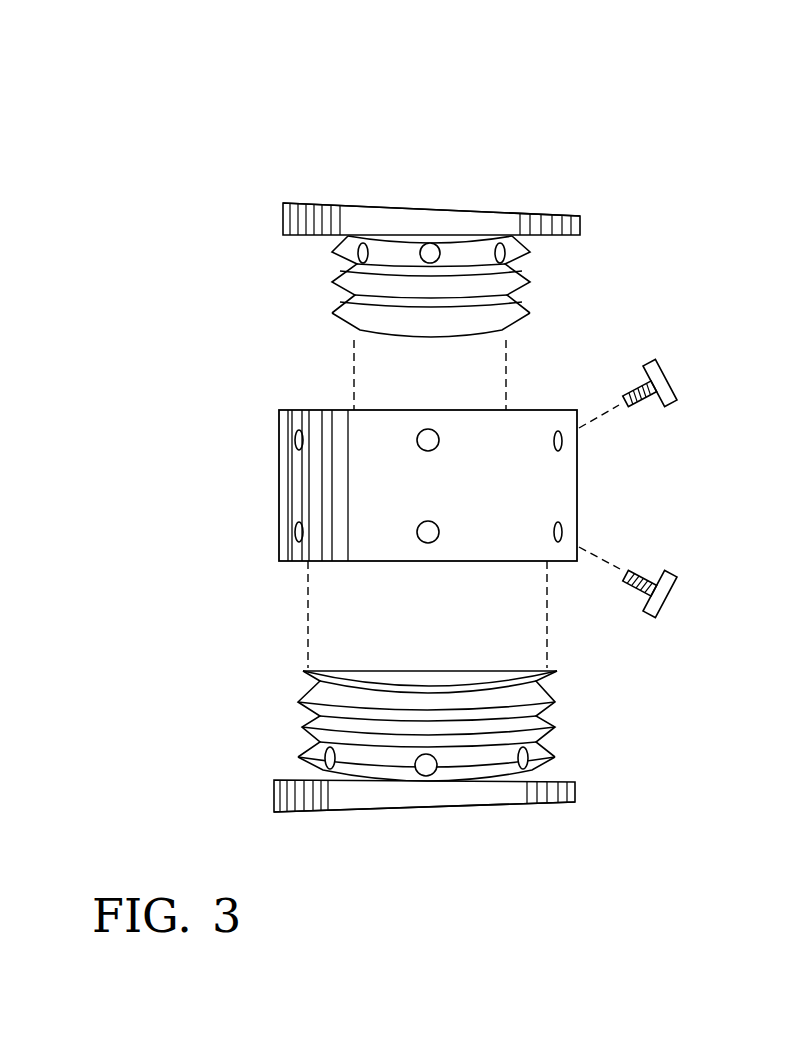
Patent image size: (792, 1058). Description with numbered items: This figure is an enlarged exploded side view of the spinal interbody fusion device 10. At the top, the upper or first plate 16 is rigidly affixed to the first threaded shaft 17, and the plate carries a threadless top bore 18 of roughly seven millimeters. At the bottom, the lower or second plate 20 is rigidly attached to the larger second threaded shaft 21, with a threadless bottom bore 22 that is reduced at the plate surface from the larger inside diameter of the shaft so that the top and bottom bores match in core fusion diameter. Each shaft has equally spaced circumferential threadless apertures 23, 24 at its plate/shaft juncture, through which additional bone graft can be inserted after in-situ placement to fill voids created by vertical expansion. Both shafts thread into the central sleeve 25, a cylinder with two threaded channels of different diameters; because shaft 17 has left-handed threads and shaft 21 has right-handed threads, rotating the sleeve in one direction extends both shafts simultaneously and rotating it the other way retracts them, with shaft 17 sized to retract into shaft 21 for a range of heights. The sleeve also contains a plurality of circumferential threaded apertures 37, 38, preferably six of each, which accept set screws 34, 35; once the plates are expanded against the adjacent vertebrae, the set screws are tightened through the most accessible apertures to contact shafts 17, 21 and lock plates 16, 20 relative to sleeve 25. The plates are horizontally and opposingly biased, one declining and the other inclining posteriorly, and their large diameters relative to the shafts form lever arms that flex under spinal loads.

The spinal interbody fusion device 10 is at (648, 142).
The first plate 16 is at (560, 213).
The first threaded shaft 17 is at (332, 313).
The threadless top bore 18 is at (388, 208).
The second plate 20 is at (563, 807).
The second threaded shaft 21 is at (300, 702).
The threadless bottom bore 22 is at (410, 810).
The circumferential threadless apertures 23 is at (355, 257).
The circumferential threadless apertures 24 is at (320, 750).
The central sleeve 25 is at (277, 469).
The set screw 34 is at (672, 383).
The set screw 35 is at (673, 590).
The circumferential threaded apertures 37 is at (428, 437).
The circumferential threaded apertures 38 is at (423, 537).